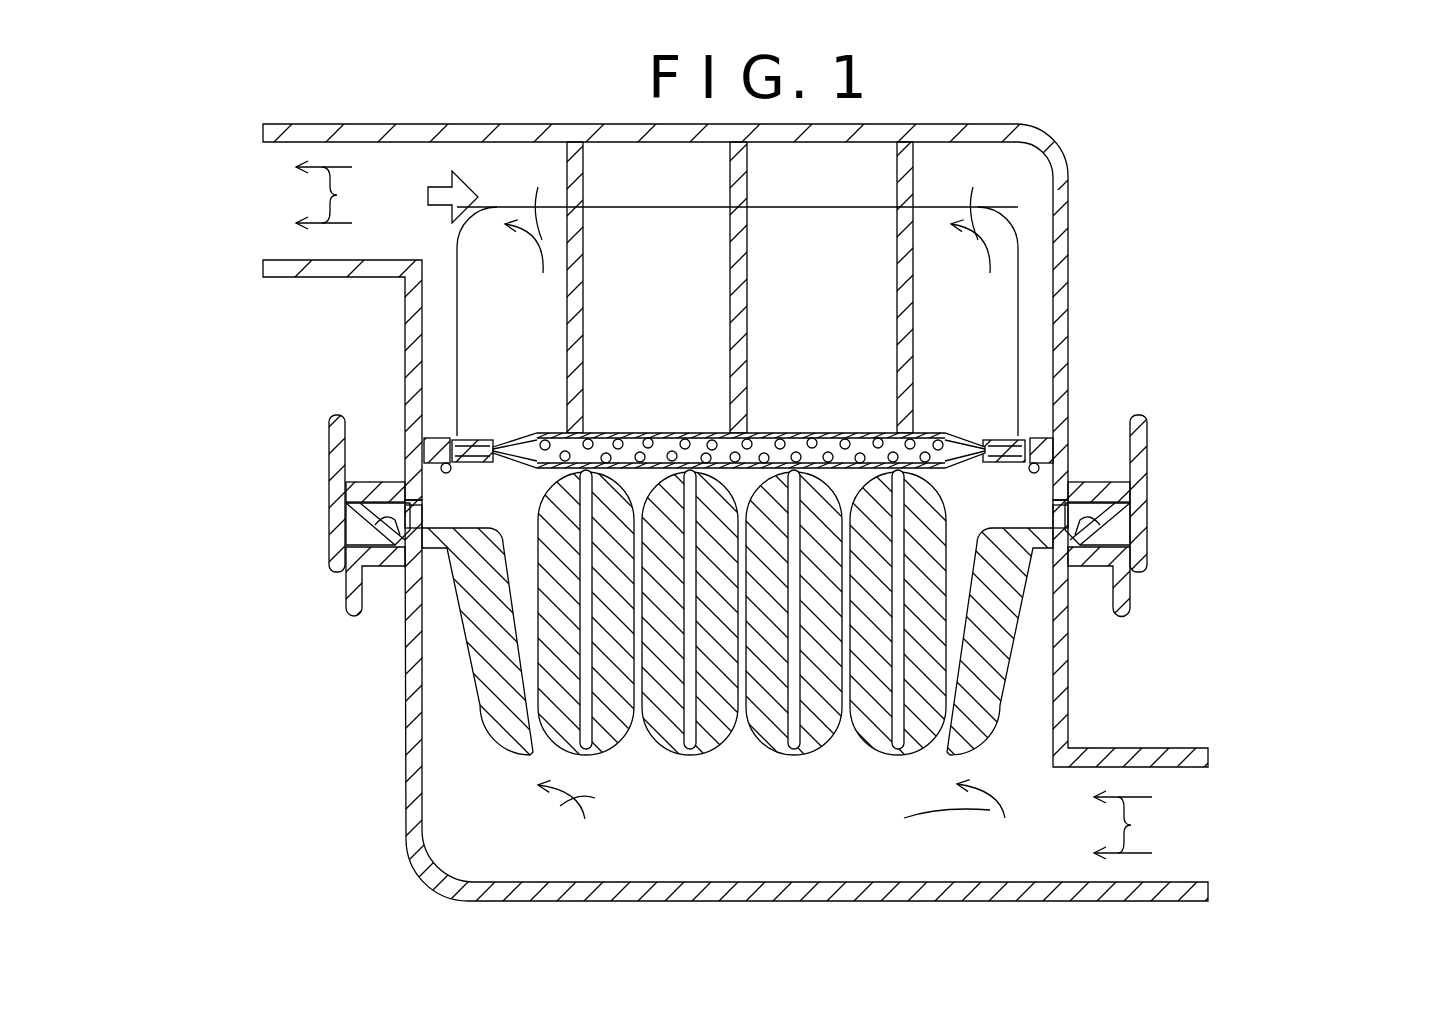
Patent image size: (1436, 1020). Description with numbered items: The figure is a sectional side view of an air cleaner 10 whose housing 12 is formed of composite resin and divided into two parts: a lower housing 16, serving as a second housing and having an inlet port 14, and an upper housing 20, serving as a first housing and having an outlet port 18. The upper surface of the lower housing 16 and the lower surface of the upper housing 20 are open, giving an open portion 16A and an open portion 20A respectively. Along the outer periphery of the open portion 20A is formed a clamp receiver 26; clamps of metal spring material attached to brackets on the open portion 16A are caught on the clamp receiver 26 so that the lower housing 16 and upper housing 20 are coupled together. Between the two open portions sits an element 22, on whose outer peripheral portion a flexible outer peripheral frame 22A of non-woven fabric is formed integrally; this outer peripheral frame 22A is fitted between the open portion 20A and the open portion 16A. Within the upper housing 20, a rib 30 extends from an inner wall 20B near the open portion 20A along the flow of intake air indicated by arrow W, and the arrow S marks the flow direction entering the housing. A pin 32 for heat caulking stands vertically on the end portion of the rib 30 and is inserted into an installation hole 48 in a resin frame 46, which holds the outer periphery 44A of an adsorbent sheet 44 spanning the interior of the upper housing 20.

The air cleaner 10 is at (1240, 361).
The housing 12 is at (1312, 440).
The inlet port 14 is at (1208, 848).
The lower housing 16 is at (1162, 732).
The open portion of the lower housing 16A is at (388, 556).
The outlet port 18 is at (262, 222).
The upper housing 20 is at (1118, 298).
The open portion of the upper housing 20A is at (368, 488).
The inner wall 20B is at (408, 512).
The element 22 is at (768, 766).
The outer peripheral frame 22A is at (345, 516).
The clamp receiver 26 is at (330, 432).
The rib 30 is at (458, 318).
The pin 32 is at (447, 472).
The adsorbent sheet 44 is at (824, 428).
The outer periphery of the adsorbent sheet 44A is at (527, 440).
The resin frame 46 is at (472, 436).
The installation hole 48 is at (442, 437).
The air flow direction S is at (440, 182).
The flow of intake air W is at (650, 497).